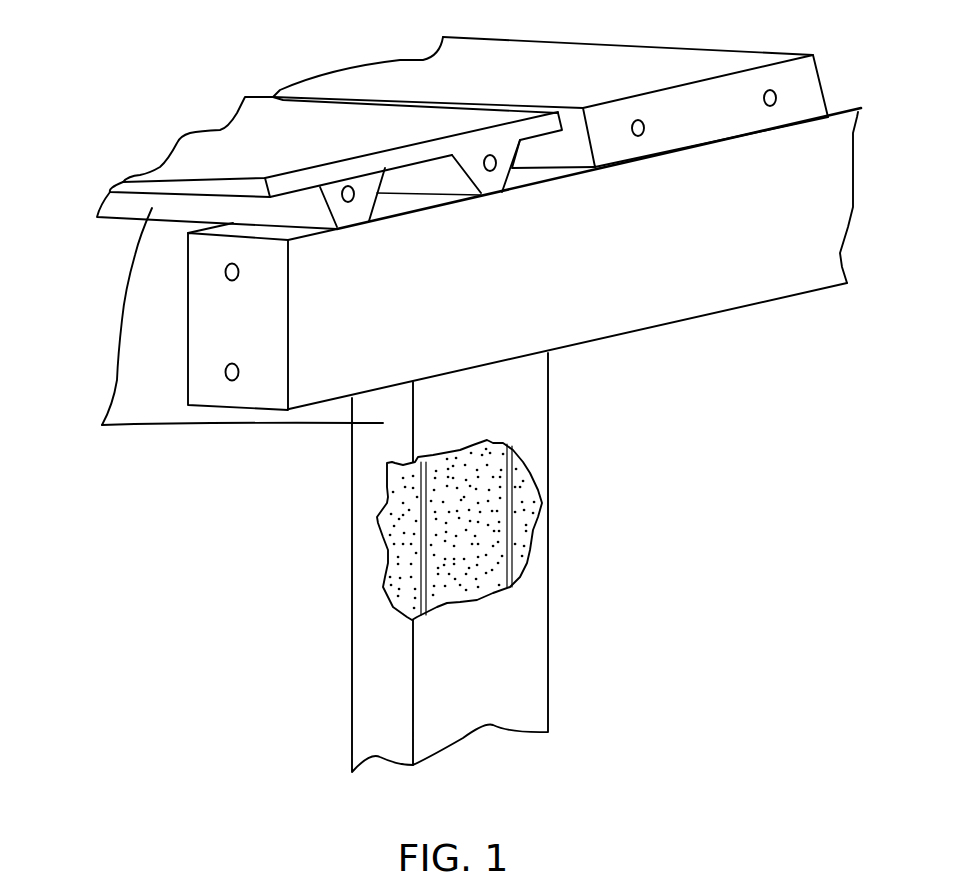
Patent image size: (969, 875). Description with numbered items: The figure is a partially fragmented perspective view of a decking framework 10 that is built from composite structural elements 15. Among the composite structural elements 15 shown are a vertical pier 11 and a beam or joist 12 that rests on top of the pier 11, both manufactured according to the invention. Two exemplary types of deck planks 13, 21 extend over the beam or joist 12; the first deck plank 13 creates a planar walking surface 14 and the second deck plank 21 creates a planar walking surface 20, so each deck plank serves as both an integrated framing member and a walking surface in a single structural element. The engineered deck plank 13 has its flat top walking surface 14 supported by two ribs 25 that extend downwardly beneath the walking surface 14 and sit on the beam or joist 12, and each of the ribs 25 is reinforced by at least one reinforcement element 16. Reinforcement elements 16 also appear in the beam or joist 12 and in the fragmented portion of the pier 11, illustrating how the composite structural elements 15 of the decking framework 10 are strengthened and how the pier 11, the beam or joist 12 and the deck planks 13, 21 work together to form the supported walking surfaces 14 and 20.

The decking framework 10 is at (295, 52).
The pier 11 is at (541, 493).
The beam or joist 12 is at (648, 308).
The deck plank 13 is at (275, 97).
The walking surface 14 is at (250, 143).
The composite structural element 15 is at (205, 342).
The reinforcement element 16 is at (496, 164).
The walking surface 20 is at (508, 70).
The deck plank 21 is at (655, 47).
The rib 25 is at (483, 183).